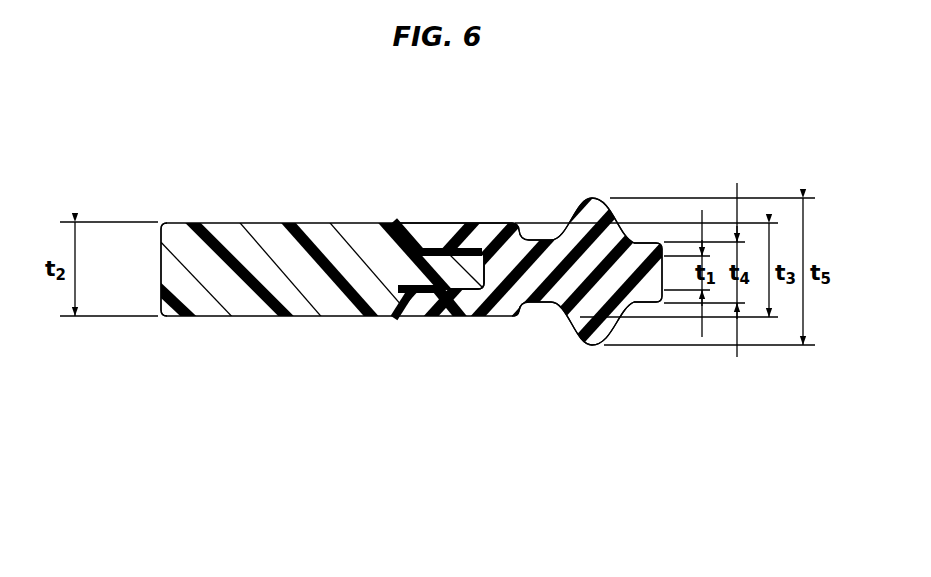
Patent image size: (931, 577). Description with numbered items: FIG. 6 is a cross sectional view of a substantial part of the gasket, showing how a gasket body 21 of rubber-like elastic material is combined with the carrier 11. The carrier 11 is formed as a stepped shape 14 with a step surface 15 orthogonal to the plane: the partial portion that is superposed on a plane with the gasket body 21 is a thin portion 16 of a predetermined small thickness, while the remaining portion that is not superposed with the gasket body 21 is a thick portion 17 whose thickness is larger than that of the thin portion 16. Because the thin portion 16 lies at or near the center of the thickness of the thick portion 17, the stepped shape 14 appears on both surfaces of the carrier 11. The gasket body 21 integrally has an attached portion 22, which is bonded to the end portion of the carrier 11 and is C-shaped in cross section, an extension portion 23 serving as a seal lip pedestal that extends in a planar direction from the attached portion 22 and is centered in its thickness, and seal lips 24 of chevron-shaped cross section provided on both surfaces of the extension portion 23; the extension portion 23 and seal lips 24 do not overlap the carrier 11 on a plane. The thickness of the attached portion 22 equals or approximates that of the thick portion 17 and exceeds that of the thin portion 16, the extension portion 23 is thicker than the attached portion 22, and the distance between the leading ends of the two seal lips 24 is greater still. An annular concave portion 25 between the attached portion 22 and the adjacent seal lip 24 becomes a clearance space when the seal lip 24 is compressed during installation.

The carrier 11 is at (231, 233).
The stepped shape 14 is at (419, 242).
The step surface 15 is at (403, 228).
The thin portion 16 is at (460, 277).
The thick portion 17 is at (173, 268).
The gasket body 21 is at (615, 243).
The attached portion 22 is at (485, 233).
The extension portion 23 is at (650, 280).
The seal lip 24 is at (595, 212).
The annular concave portion 25 is at (531, 236).